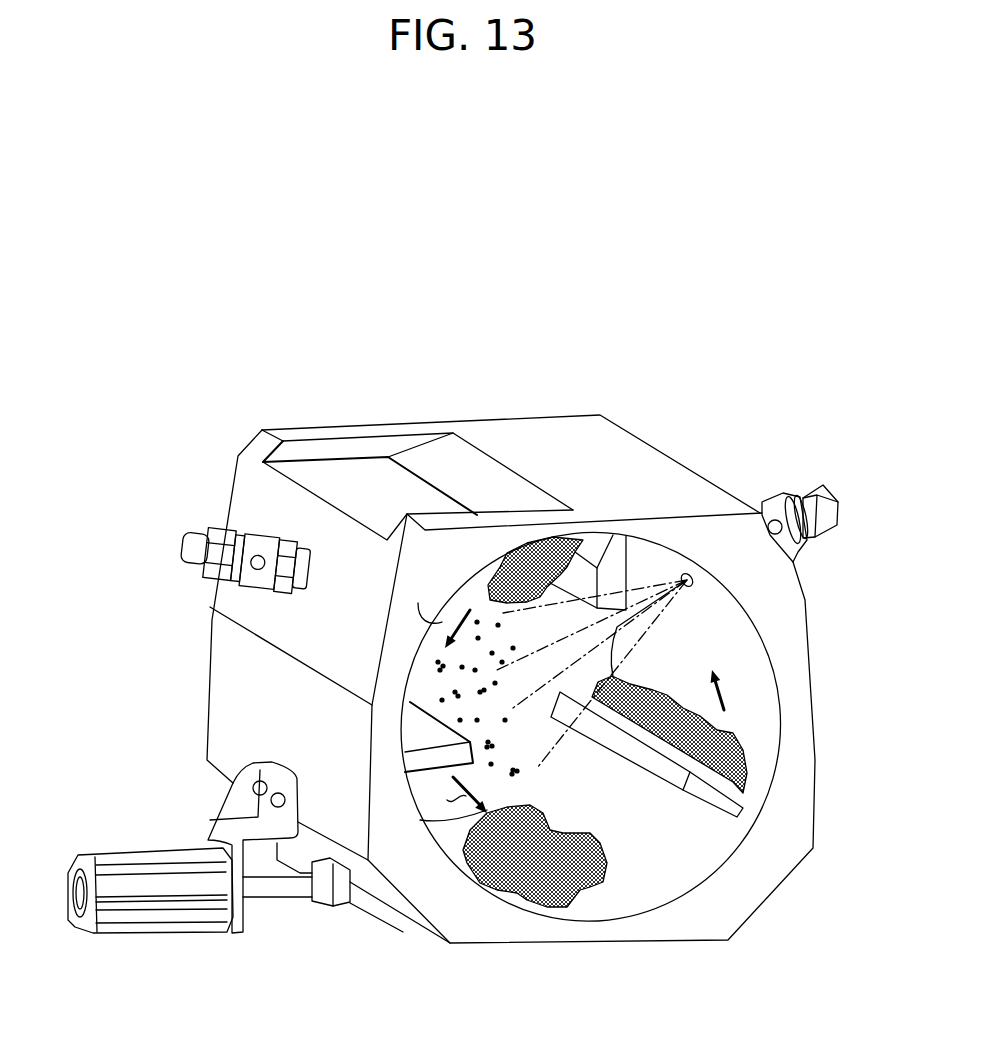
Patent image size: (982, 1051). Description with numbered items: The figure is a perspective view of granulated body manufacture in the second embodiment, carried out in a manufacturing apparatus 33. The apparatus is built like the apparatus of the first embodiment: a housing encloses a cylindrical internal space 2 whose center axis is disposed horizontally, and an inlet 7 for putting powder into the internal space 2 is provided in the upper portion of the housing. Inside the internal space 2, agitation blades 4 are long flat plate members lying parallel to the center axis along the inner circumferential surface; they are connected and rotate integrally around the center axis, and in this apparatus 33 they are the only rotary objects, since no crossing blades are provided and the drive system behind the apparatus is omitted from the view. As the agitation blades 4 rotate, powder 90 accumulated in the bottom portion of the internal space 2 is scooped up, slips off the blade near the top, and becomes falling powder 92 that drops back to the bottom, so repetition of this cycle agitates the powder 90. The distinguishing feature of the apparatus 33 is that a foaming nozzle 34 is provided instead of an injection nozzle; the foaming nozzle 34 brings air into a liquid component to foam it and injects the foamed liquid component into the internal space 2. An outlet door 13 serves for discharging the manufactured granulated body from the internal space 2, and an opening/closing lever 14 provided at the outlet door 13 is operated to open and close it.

The manufacturing apparatus 33 is at (612, 355).
The inlet 7 is at (390, 470).
The agitation blades 4 is at (613, 562).
The foaming nozzle 34 is at (247, 532).
The falling powder 92 is at (433, 687).
The opening/closing lever 14 is at (133, 853).
The outlet door 13 is at (517, 903).
The internal space 2 is at (626, 837).
The powder 90 is at (583, 887).